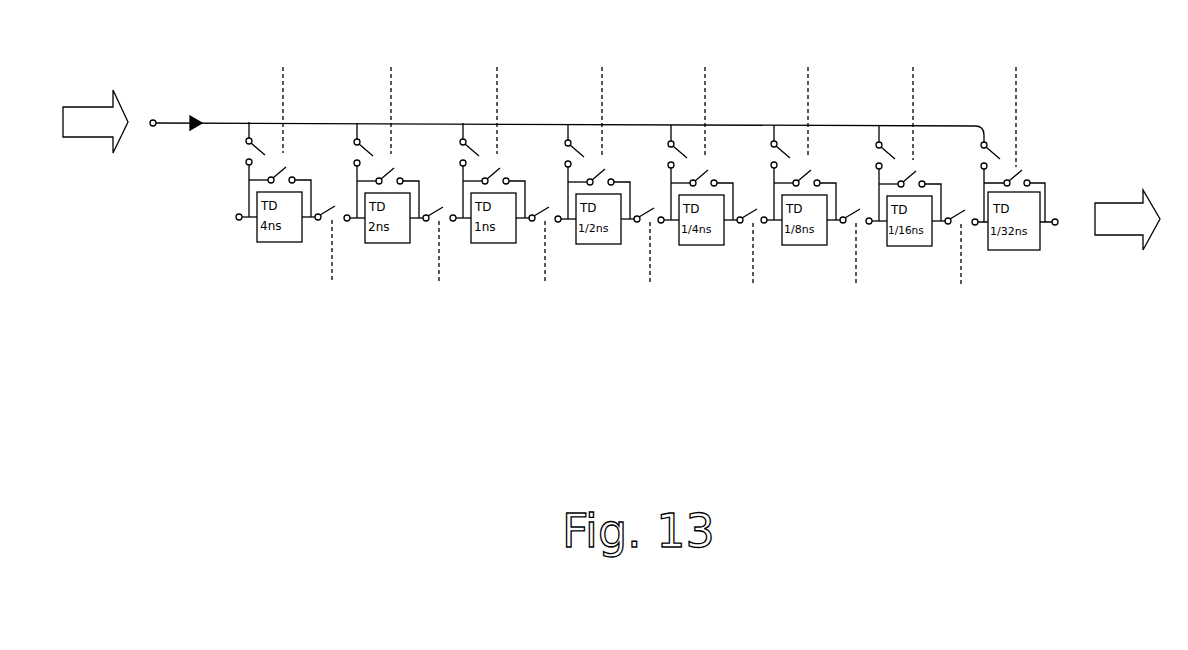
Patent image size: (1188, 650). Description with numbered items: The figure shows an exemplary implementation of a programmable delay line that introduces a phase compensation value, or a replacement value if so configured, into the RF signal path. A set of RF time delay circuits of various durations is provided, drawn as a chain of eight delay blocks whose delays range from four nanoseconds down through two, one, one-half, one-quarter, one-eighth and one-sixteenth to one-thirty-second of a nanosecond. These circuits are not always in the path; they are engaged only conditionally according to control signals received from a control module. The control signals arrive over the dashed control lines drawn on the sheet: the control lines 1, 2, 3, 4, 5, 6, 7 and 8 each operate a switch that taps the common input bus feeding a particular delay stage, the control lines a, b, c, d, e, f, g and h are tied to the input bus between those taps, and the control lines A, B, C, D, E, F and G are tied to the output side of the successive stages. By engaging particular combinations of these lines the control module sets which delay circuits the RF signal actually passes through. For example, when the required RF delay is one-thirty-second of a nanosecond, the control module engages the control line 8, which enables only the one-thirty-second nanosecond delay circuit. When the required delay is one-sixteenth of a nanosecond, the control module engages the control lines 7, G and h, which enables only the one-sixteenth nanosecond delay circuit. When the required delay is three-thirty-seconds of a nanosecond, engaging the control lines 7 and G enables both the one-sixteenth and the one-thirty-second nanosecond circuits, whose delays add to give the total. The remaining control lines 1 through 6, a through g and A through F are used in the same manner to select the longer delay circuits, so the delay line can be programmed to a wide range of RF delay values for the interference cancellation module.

The control line 1 is at (241, 150).
The control line 2 is at (349, 151).
The control line 3 is at (455, 151).
The control line 4 is at (560, 152).
The control line 5 is at (663, 153).
The control line 6 is at (766, 153).
The control line 7 is at (871, 154).
The control line 8 is at (976, 154).
The control line a is at (279, 88).
The control line b is at (387, 89).
The control line c is at (493, 89).
The control line d is at (598, 89).
The control line e is at (701, 90).
The control line f is at (804, 90).
The control line g is at (909, 92).
The control line h is at (1014, 95).
The control line A is at (332, 271).
The control line B is at (439, 272).
The control line C is at (545, 272).
The control line D is at (650, 272).
The control line E is at (753, 273).
The control line F is at (856, 273).
The control line G is at (961, 273).